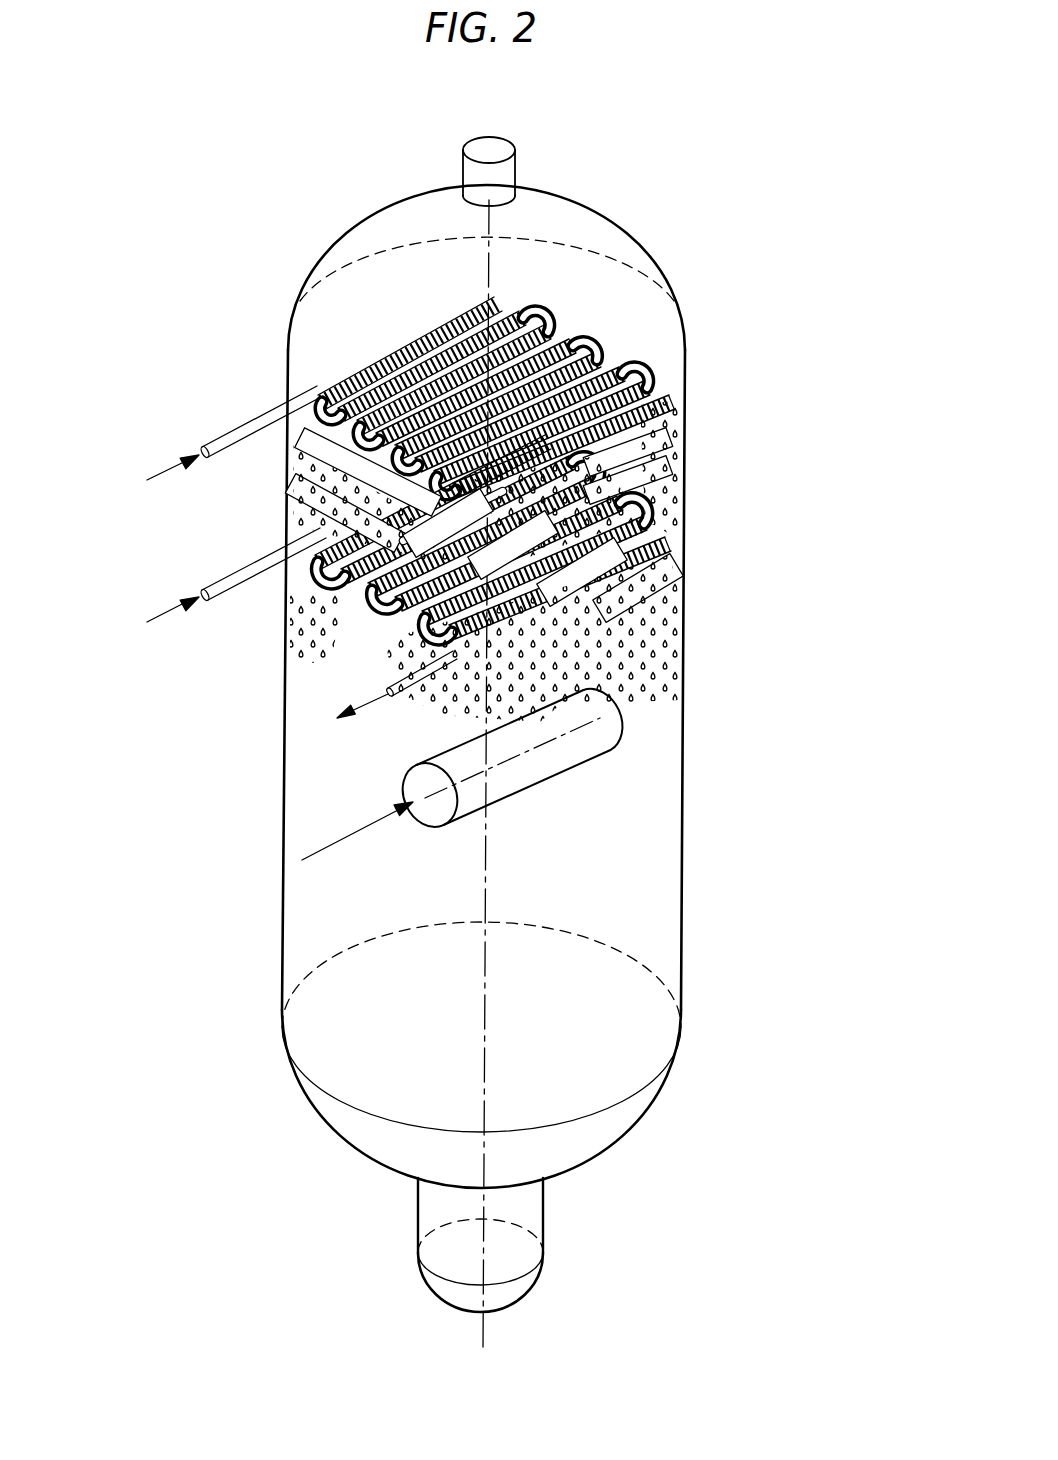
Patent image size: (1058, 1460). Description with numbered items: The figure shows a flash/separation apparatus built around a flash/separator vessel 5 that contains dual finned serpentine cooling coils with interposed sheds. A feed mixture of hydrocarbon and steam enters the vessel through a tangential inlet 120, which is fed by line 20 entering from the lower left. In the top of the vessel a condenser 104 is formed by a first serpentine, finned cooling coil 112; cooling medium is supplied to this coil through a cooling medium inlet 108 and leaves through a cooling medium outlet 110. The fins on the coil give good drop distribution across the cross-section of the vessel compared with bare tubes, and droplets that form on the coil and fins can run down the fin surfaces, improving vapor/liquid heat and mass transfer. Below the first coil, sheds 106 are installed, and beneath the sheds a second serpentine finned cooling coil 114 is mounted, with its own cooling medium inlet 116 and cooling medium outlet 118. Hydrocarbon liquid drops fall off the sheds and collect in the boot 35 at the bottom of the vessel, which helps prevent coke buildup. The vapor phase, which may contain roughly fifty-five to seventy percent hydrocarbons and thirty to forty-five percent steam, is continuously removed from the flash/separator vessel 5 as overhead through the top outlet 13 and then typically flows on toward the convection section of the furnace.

The flash/separator vessel 5 is at (686, 815).
The overhead line 13 is at (517, 162).
The feed line 20 is at (367, 828).
The boot 35 is at (545, 1207).
The condenser 104 is at (372, 352).
The sheds 106 is at (288, 487).
The cooling medium inlet 108 is at (226, 433).
The cooling medium outlet 110 is at (383, 615).
The first serpentine finned cooling coil 112 is at (610, 328).
The second serpentine finned cooling coil 114 is at (678, 548).
The cooling medium inlet 116 is at (228, 572).
The cooling medium outlet 118 is at (412, 692).
The tangential inlet 120 is at (555, 752).